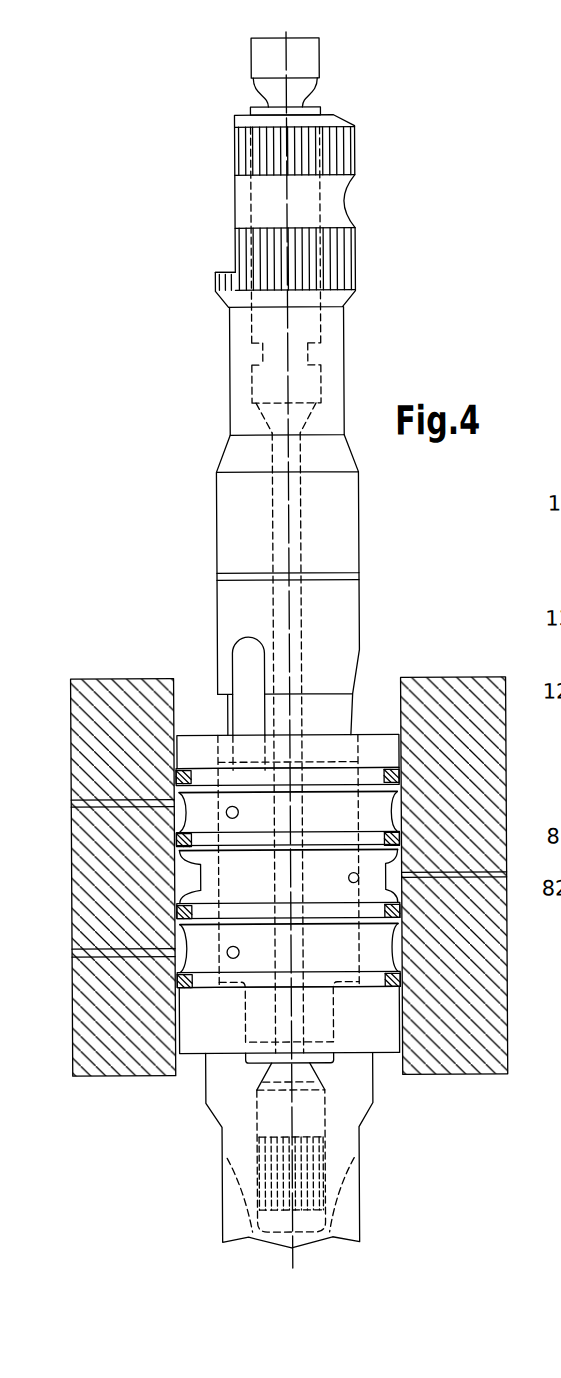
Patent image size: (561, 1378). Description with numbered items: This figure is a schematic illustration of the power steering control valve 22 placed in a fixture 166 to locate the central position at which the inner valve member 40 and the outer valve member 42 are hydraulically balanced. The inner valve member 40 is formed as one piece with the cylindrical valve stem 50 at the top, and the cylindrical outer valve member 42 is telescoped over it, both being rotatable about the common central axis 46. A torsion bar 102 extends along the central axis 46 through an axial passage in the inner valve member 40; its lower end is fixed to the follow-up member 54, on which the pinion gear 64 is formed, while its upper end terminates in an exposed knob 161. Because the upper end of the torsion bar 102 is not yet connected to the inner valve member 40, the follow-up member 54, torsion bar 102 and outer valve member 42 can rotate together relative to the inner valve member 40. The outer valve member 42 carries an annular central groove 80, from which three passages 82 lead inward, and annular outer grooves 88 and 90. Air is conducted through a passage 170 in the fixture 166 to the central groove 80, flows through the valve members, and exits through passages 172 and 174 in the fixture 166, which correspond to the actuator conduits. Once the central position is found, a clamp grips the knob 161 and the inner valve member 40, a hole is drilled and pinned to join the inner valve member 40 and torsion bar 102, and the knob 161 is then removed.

The knob 161 is at (306, 58).
The valve stem 50 is at (328, 362).
The central axis 46 is at (281, 425).
The torsion bar 102 is at (267, 513).
The inner valve member 40 is at (373, 562).
The power steering control valve 22 is at (386, 643).
The fixture 166 is at (124, 663).
The fixture passage 172 is at (106, 800).
The fixture passage 174 is at (118, 947).
The fixture passage 170 is at (455, 877).
The annular outer groove 88 is at (172, 796).
The annular central groove 80 is at (388, 865).
The passages 82 is at (195, 880).
The annular outer groove 90 is at (178, 957).
The outer valve member 42 is at (176, 1070).
The follow-up member 54 is at (222, 1092).
The pinion gear 64 is at (265, 1185).